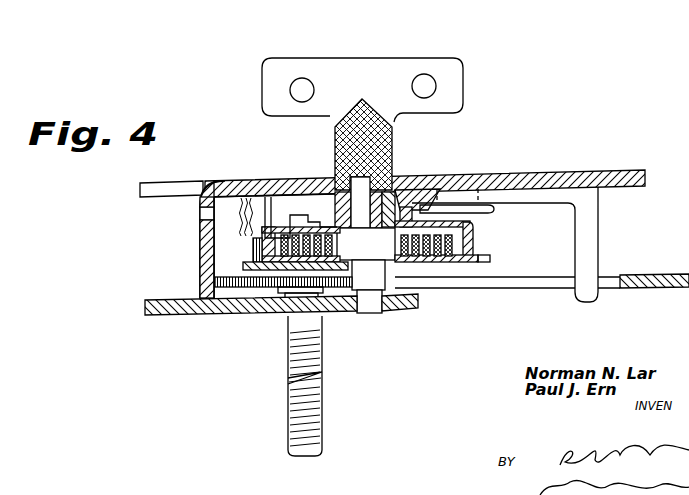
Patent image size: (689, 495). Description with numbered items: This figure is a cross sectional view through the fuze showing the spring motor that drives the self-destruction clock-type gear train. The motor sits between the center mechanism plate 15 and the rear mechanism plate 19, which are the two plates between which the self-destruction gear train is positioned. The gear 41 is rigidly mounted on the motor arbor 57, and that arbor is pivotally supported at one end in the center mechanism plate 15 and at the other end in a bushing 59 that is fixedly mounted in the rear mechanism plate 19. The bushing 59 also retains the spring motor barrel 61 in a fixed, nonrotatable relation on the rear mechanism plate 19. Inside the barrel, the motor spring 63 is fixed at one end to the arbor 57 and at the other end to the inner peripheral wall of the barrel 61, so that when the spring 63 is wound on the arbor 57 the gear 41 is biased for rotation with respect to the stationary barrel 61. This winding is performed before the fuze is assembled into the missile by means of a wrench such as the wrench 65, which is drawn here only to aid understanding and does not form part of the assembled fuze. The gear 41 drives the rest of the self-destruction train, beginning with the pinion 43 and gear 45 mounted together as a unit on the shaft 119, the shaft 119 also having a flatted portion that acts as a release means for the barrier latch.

The center mechanism plate 15 is at (640, 288).
The rear mechanism plate 19 is at (540, 173).
The gear 41 is at (473, 262).
The pinion 43 is at (257, 247).
The gear 45 is at (240, 274).
The motor arbor 57 is at (335, 185).
The bushing 59 is at (396, 188).
The spring motor barrel 61 is at (470, 226).
The motor spring 63 is at (447, 237).
The wrench 65 is at (446, 59).
The shaft 119 is at (321, 393).